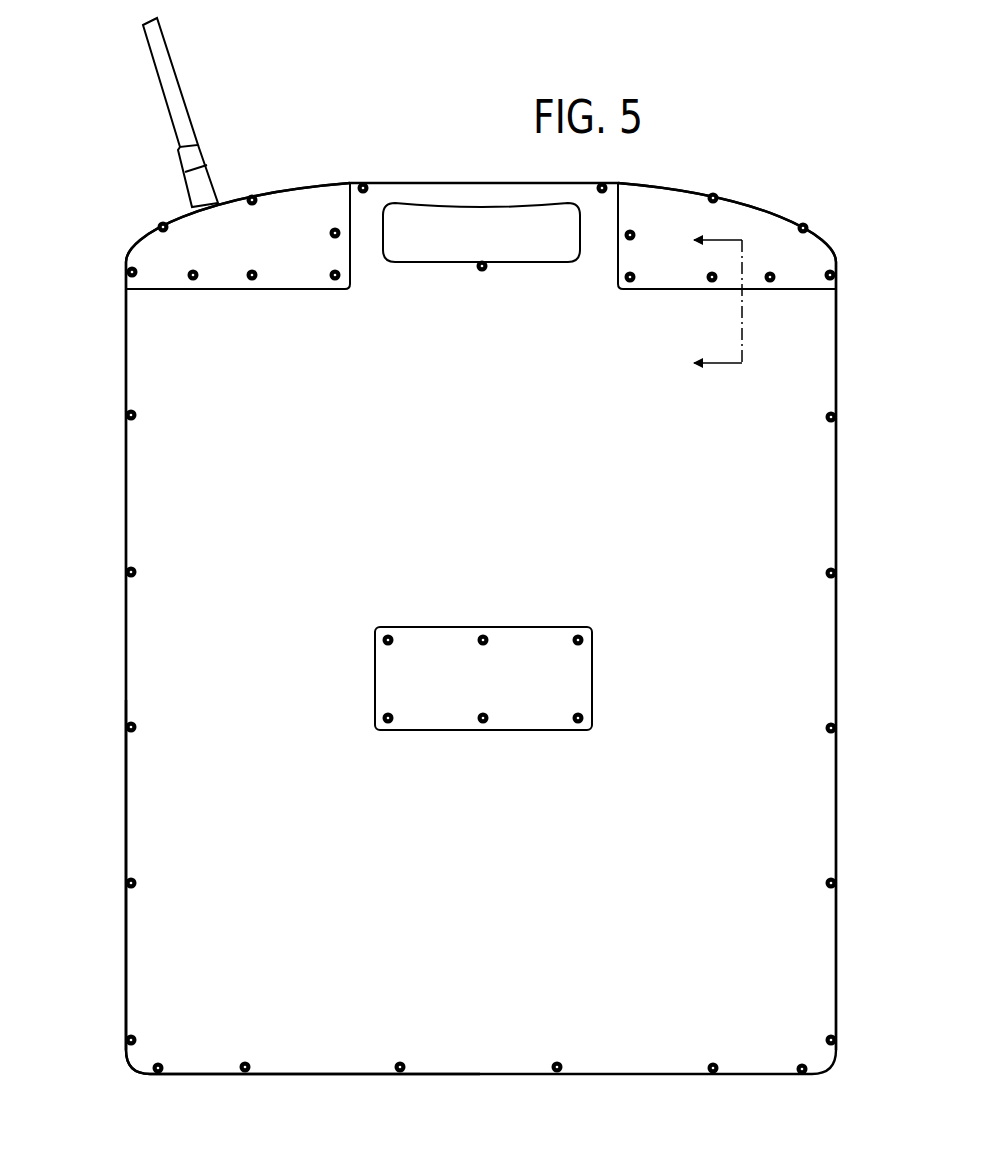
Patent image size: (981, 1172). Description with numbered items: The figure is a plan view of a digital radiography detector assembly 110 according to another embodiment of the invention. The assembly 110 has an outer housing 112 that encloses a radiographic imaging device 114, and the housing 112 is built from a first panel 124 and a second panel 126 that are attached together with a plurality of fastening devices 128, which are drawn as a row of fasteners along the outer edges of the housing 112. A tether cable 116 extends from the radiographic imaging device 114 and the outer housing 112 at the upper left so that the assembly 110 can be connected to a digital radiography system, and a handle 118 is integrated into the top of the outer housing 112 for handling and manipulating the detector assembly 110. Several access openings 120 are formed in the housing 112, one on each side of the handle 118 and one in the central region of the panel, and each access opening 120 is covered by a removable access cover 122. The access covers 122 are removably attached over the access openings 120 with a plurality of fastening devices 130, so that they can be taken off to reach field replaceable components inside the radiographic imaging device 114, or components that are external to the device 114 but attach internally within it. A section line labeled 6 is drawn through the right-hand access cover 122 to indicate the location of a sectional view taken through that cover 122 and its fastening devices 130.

The digital radiography detector assembly 110 is at (401, 139).
The outer housing 112 is at (813, 377).
The radiographic imaging device 114 is at (837, 655).
The tether cable 116 is at (177, 98).
The handle 118 is at (477, 195).
The access openings 120 is at (300, 186).
The removable access covers 122 is at (143, 242).
The first panel 124 is at (126, 648).
The second panel 126 is at (144, 791).
The fastening devices 128 is at (836, 883).
The fastening devices 130 is at (258, 276).
The section line 6- 6 is at (706, 302).